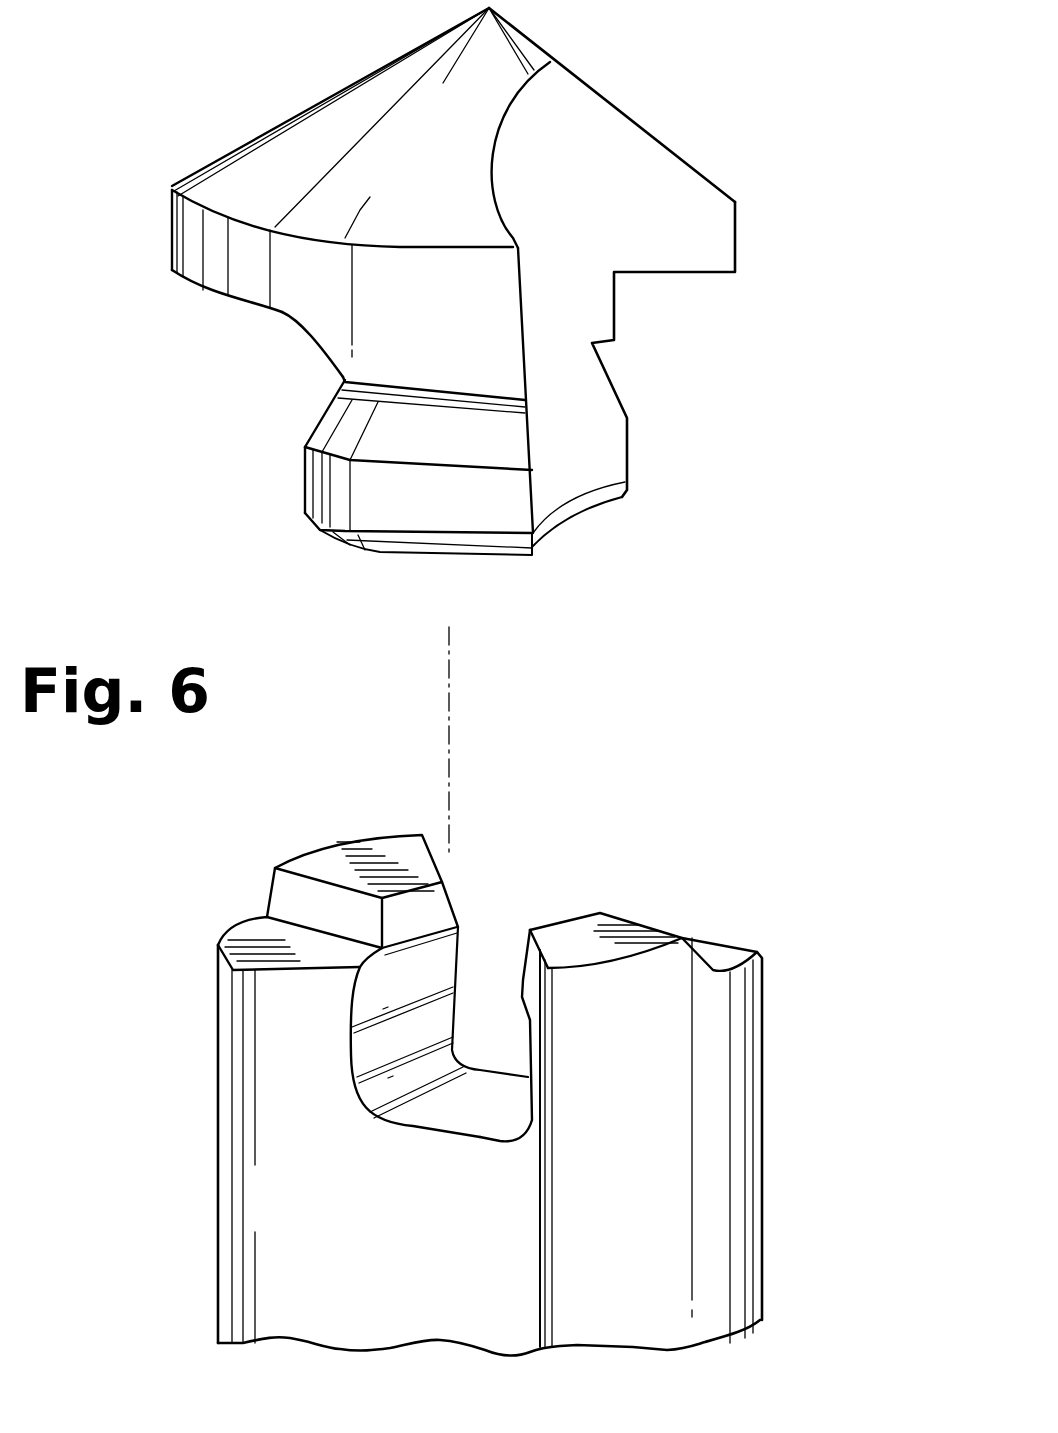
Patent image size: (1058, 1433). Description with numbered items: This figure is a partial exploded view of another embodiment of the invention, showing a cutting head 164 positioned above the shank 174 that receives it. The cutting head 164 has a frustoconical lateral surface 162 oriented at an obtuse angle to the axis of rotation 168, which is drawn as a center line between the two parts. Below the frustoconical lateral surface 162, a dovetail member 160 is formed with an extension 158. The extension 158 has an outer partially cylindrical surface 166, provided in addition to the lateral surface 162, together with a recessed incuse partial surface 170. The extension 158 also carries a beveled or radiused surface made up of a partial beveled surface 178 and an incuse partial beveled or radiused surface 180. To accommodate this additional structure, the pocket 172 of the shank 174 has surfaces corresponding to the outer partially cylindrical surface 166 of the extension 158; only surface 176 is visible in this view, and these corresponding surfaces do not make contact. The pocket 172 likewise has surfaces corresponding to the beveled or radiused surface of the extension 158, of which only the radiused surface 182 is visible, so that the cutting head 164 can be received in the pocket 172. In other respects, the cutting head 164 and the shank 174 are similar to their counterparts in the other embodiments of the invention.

The extension 158 is at (218, 490).
The dovetail member 160 is at (656, 426).
The frustoconical lateral surface 162 is at (445, 445).
The cutting head 164 is at (688, 76).
The outer partially cylindrical surface 166 is at (445, 522).
The axis of rotation 168 is at (450, 703).
The recessed incuse partial surface 170 is at (598, 473).
The pocket 172 is at (636, 830).
The shank 174 is at (809, 1039).
The surface 176 is at (432, 1027).
The partial beveled surface 178 is at (410, 545).
The incuse partial beveled or radiused surface 180 is at (594, 500).
The radiused surface 182 is at (414, 1080).